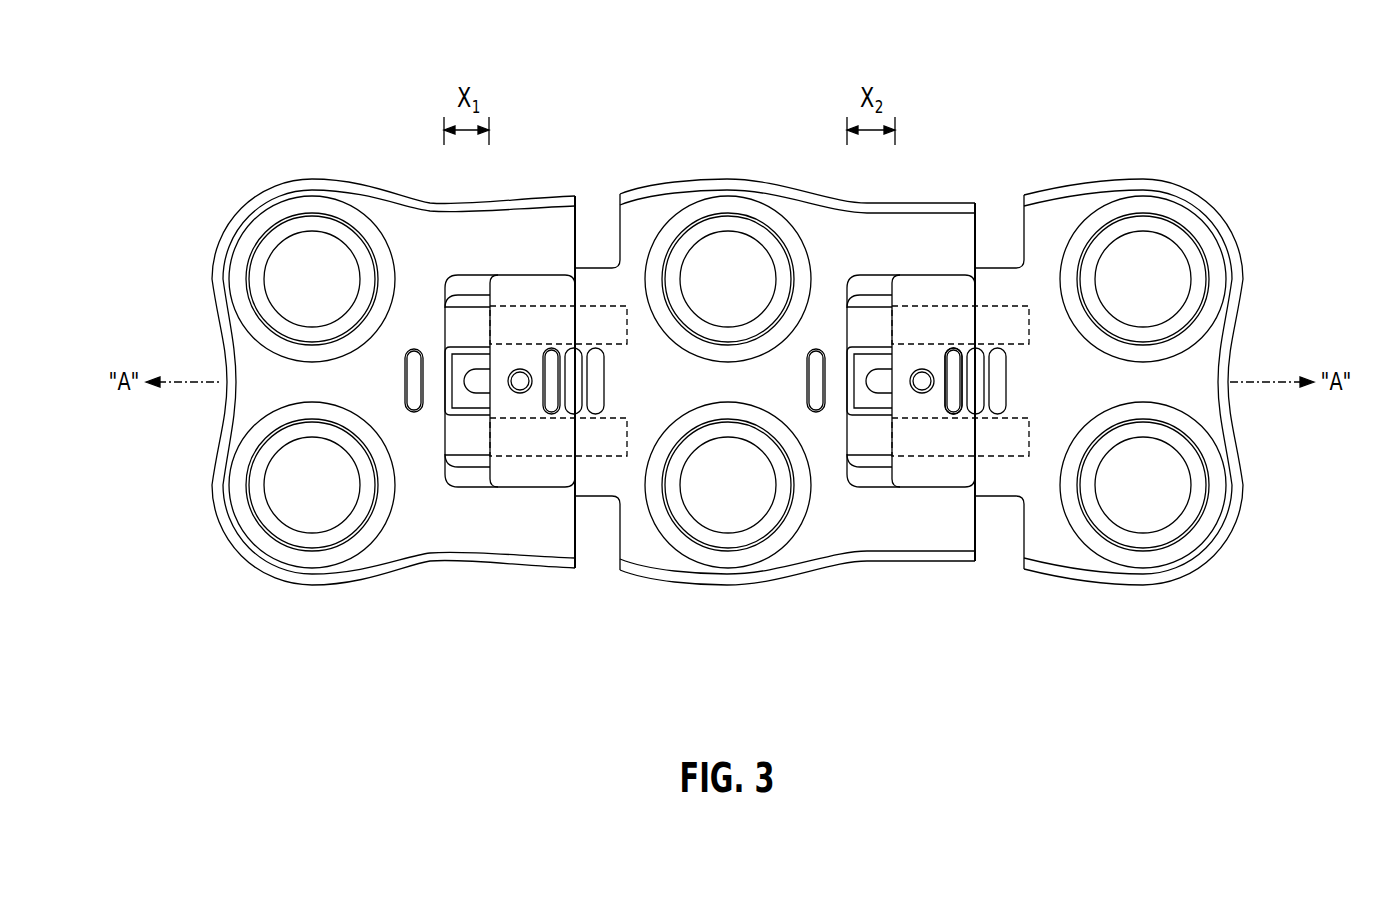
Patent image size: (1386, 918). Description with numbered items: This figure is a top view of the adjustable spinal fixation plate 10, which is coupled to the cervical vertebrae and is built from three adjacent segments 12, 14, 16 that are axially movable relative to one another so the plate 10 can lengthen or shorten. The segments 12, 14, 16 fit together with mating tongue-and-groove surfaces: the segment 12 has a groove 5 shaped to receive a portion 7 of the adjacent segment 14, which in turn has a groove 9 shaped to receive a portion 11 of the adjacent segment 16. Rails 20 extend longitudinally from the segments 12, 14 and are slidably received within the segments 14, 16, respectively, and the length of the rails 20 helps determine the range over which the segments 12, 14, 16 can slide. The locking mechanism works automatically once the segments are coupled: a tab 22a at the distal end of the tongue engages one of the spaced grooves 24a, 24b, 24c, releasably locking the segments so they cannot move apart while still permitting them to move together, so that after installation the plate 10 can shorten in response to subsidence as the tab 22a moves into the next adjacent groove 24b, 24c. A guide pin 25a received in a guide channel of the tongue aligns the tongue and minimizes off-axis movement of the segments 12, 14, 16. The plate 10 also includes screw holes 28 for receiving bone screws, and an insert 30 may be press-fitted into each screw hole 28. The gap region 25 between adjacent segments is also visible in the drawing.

The plate 10 is at (1158, 84).
The segment 12 is at (399, 389).
The segment 14 is at (840, 537).
The segment 16 is at (1054, 537).
The insert 30 is at (312, 205).
The screw hole 28 is at (1143, 278).
The rail 20 is at (466, 318).
The groove 5 is at (557, 270).
The notch 25 is at (601, 265).
The portion 7 is at (548, 320).
The guide pin 25a is at (520, 391).
The groove 9 is at (912, 273).
The portion 11 is at (908, 470).
The groove 24a is at (955, 346).
The groove 24b is at (977, 346).
The groove 24c is at (1000, 346).
The tab 22a is at (953, 412).